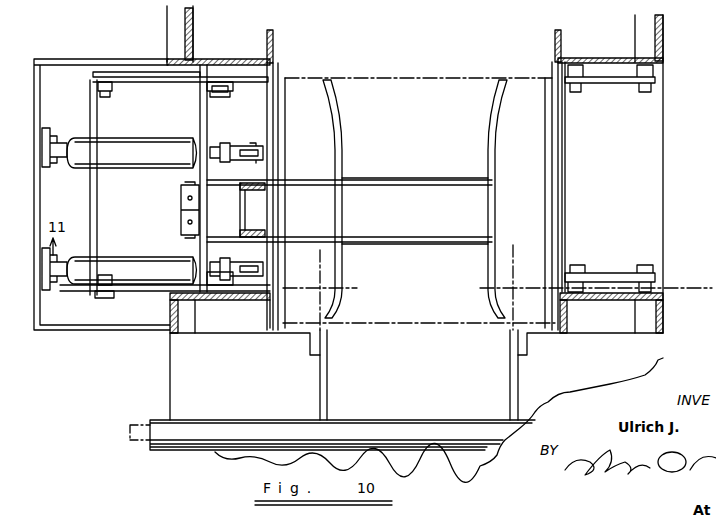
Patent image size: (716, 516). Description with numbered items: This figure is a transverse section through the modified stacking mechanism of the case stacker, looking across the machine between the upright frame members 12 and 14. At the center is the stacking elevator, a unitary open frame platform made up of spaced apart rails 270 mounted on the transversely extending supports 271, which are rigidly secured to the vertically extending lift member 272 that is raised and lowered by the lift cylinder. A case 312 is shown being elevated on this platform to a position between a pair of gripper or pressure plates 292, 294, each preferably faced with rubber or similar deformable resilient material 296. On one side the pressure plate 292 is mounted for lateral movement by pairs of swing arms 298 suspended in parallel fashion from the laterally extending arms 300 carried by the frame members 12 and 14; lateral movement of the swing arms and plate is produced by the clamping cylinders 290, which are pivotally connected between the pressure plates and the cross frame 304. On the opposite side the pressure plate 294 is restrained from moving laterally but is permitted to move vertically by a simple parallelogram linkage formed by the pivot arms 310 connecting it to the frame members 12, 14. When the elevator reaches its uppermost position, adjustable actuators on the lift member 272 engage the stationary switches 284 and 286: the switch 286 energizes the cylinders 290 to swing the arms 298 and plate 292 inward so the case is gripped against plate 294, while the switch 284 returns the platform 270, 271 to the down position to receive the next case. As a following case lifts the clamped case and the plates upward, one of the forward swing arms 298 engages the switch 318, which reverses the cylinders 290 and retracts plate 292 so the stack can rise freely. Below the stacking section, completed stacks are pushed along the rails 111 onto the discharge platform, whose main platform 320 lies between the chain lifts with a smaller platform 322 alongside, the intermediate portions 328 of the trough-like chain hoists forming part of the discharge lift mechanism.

The frame member 12 is at (250, 60).
The frame member 14 is at (240, 303).
The rails 111 is at (327, 385).
The rails 270 is at (336, 146).
The transversely extending supports 271 is at (405, 237).
The lift member 272 is at (258, 222).
The switch 284 is at (182, 218).
The switch 286 is at (182, 197).
The clamping cylinders 290 is at (133, 145).
The pressure plate 292 is at (274, 163).
The pressure plate 294 is at (558, 215).
The deformable resilient material 296 is at (274, 108).
The swing arms 298 is at (207, 86).
The laterally extending arms 300 is at (108, 72).
The cross frame 304 is at (36, 60).
The pivot arms 310 is at (609, 83).
The case 312 is at (303, 78).
The switch 318 is at (237, 92).
The main platform 320 is at (430, 462).
The smaller platform 322 is at (247, 393).
The intermediate portions 328 is at (393, 432).